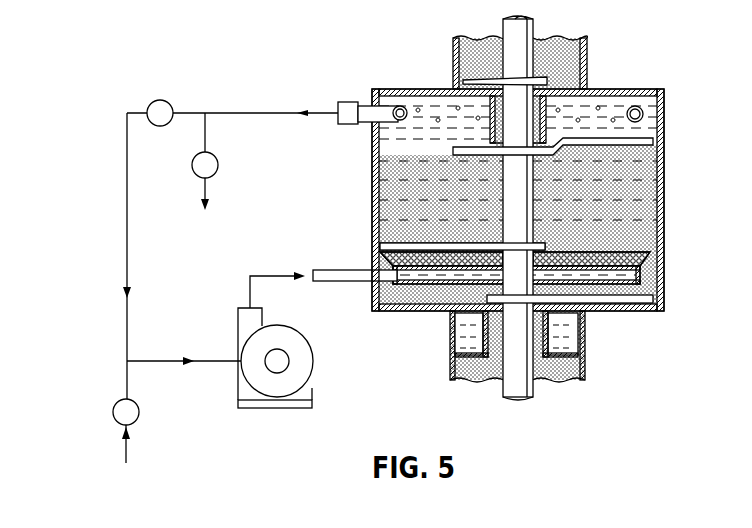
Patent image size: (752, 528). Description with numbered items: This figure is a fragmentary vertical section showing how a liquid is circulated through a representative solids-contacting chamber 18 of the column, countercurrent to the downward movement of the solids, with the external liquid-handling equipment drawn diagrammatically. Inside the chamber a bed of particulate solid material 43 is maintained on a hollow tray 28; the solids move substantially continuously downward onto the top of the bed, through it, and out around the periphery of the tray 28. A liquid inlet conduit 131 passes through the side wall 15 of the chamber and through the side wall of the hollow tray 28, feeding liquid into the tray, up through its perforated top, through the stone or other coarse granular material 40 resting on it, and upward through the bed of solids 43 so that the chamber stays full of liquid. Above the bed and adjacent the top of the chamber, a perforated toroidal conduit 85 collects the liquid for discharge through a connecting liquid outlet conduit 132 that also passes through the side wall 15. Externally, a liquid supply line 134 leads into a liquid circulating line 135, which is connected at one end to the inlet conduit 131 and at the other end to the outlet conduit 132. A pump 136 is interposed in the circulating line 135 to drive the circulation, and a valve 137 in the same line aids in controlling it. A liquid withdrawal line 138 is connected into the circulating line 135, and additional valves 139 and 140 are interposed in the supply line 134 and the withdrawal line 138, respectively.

The side wall 15 is at (371, 172).
The solids-contacting chamber 18 is at (652, 133).
The hollow tray 28 is at (650, 270).
The coarse granular material 40 is at (648, 258).
The bed of particulate solid material 43 is at (655, 147).
The perforated toroidal conduit 85 is at (643, 113).
The liquid inlet conduit 131 is at (336, 269).
The liquid outlet conduit 132 is at (356, 99).
The liquid supply line 134 is at (125, 450).
The liquid circulating line 135 is at (128, 211).
The pump 136 is at (317, 357).
The valve 137 is at (152, 96).
The liquid withdrawal line 138 is at (208, 188).
The valve 139 is at (147, 388).
The valve 140 is at (218, 162).